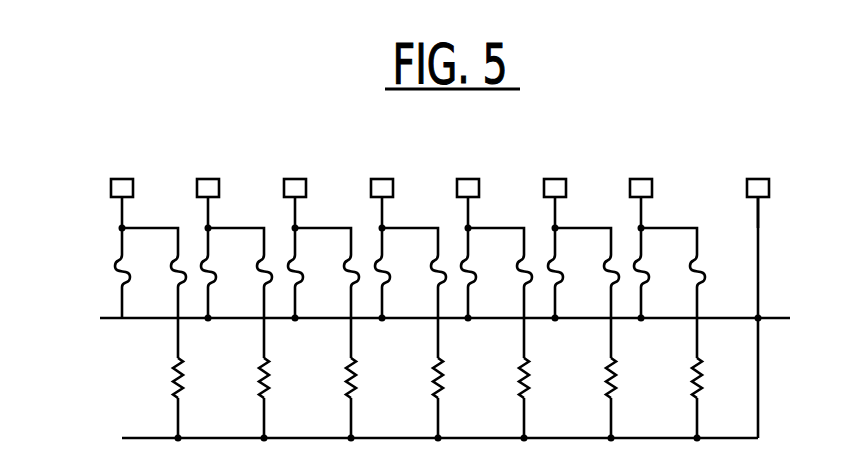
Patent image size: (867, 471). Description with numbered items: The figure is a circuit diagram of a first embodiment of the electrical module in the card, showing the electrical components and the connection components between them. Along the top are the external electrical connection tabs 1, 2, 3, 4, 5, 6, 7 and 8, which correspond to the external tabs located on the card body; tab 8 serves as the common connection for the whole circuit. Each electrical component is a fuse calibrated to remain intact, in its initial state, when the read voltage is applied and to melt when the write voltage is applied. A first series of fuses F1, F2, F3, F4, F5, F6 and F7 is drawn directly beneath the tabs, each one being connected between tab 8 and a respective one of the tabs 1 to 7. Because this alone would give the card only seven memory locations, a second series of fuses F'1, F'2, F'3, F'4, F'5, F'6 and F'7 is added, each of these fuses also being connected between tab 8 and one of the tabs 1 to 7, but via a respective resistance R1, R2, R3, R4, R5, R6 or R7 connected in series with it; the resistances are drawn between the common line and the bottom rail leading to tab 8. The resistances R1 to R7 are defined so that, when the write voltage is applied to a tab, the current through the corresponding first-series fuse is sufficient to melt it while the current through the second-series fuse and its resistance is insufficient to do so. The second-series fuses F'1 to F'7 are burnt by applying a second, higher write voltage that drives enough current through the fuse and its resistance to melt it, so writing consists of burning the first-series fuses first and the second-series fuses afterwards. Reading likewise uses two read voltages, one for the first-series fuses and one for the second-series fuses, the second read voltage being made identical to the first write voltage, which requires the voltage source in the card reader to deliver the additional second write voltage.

The external electrical connection tab 1 is at (122, 202).
The external electrical connection tab 2 is at (208, 202).
The external electrical connection tab 3 is at (295, 202).
The external electrical connection tab 4 is at (382, 202).
The external electrical connection tab 5 is at (468, 202).
The external electrical connection tab 6 is at (555, 202).
The external electrical connection tab 7 is at (641, 202).
The external electrical connection tab 8 is at (758, 189).
The fuse F1 is at (115, 262).
The fuse F2 is at (201, 258).
The fuse F3 is at (288, 258).
The fuse F4 is at (375, 258).
The fuse F5 is at (461, 258).
The fuse F6 is at (548, 258).
The fuse F7 is at (634, 258).
The fuse F'1 is at (153, 305).
The fuse F'2 is at (239, 305).
The fuse F'3 is at (326, 305).
The fuse F'4 is at (413, 305).
The fuse F'5 is at (499, 305).
The fuse F'6 is at (586, 305).
The fuse F'7 is at (672, 305).
The resistance R1 is at (175, 386).
The resistance R2 is at (261, 386).
The resistance R3 is at (348, 386).
The resistance R4 is at (435, 386).
The resistance R5 is at (521, 386).
The resistance R6 is at (608, 386).
The resistance R7 is at (694, 386).